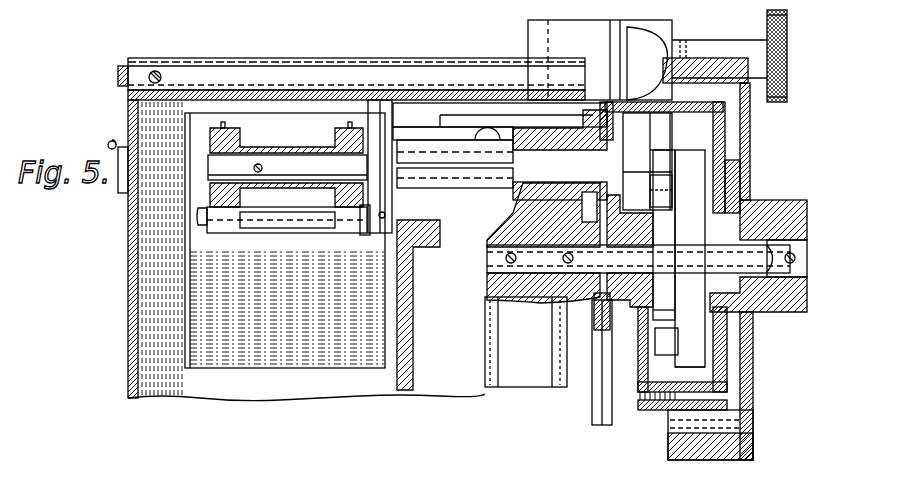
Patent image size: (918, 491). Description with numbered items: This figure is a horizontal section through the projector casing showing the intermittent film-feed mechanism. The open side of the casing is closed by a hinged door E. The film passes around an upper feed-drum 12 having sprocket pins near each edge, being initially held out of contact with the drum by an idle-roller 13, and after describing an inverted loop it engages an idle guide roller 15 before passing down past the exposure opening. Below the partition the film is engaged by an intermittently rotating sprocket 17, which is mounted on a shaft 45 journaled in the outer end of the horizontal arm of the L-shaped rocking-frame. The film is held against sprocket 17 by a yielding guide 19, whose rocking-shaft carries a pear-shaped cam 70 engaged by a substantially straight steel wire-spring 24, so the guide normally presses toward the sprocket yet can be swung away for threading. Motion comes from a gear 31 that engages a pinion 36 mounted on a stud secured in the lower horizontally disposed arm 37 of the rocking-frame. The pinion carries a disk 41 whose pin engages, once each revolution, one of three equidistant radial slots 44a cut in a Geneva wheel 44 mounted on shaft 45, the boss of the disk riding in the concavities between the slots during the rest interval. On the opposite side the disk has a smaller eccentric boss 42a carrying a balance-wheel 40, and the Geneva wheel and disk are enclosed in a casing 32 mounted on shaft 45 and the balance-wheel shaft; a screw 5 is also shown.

The screw 5 is at (787, 258).
The upper feed-drum 12 is at (672, 248).
The idle-roller 13 is at (660, 338).
The idle guide roller 15 is at (500, 151).
The intermittently rotating sprocket 17 is at (172, 160).
The yielding guide 19 is at (347, 233).
The wire-spring 24 is at (370, 110).
The gear 31 is at (598, 433).
The casing 32 is at (737, 123).
The pinion 36 is at (586, 300).
The lower horizontally disposed arm 37 is at (470, 200).
The balance-wheel 40 is at (737, 403).
The disk 41 is at (672, 290).
The eccentric boss 42a is at (735, 283).
The Geneva wheel 44 is at (647, 161).
The radial slots 44a is at (668, 190).
The shaft 45 is at (287, 164).
The pear-shaped cam 70 is at (360, 232).
The door E is at (128, 398).